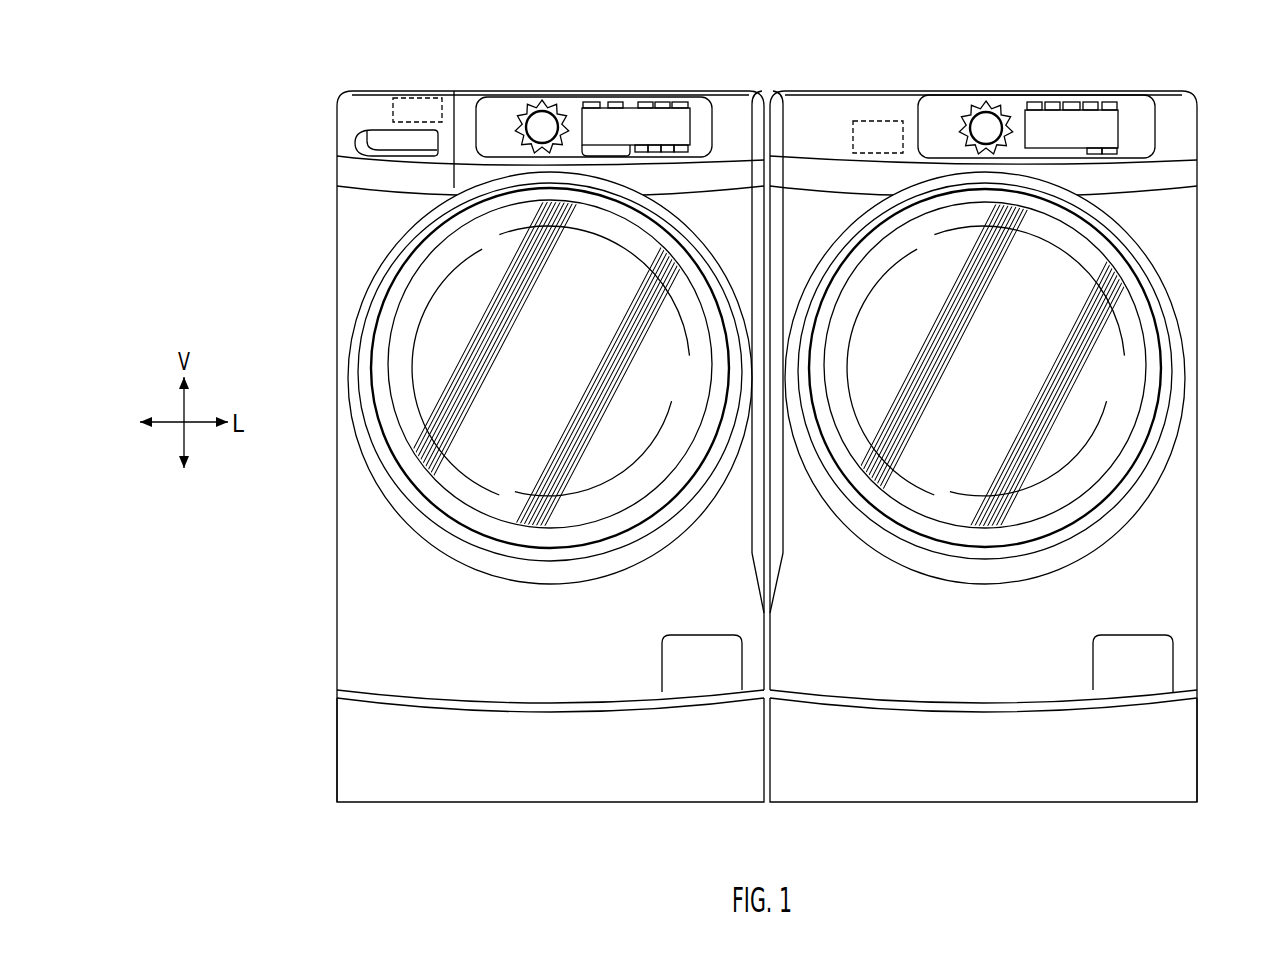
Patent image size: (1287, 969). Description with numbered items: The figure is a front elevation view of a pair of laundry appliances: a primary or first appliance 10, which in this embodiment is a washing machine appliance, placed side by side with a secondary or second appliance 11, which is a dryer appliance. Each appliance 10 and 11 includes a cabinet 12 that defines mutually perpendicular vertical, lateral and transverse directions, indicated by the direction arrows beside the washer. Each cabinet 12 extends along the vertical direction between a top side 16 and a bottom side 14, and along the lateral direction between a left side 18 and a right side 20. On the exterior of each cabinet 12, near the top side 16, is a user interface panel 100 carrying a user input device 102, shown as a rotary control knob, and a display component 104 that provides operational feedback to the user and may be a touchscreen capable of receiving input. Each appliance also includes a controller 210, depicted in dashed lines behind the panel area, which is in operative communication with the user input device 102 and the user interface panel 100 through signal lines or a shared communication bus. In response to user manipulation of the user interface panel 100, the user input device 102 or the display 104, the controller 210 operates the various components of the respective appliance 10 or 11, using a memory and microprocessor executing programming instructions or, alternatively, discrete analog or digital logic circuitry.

The first appliance 10 is at (315, 82).
The second appliance 11 is at (1221, 127).
The cabinet 12 is at (357, 598).
The bottom side 14 is at (412, 808).
The top side 16 is at (387, 81).
The left side 18 is at (332, 742).
The right side 20 is at (756, 811).
The user interface panel 100 is at (574, 107).
The user input device 102 is at (539, 124).
The display component 104 is at (660, 120).
The controller 210 is at (424, 95).